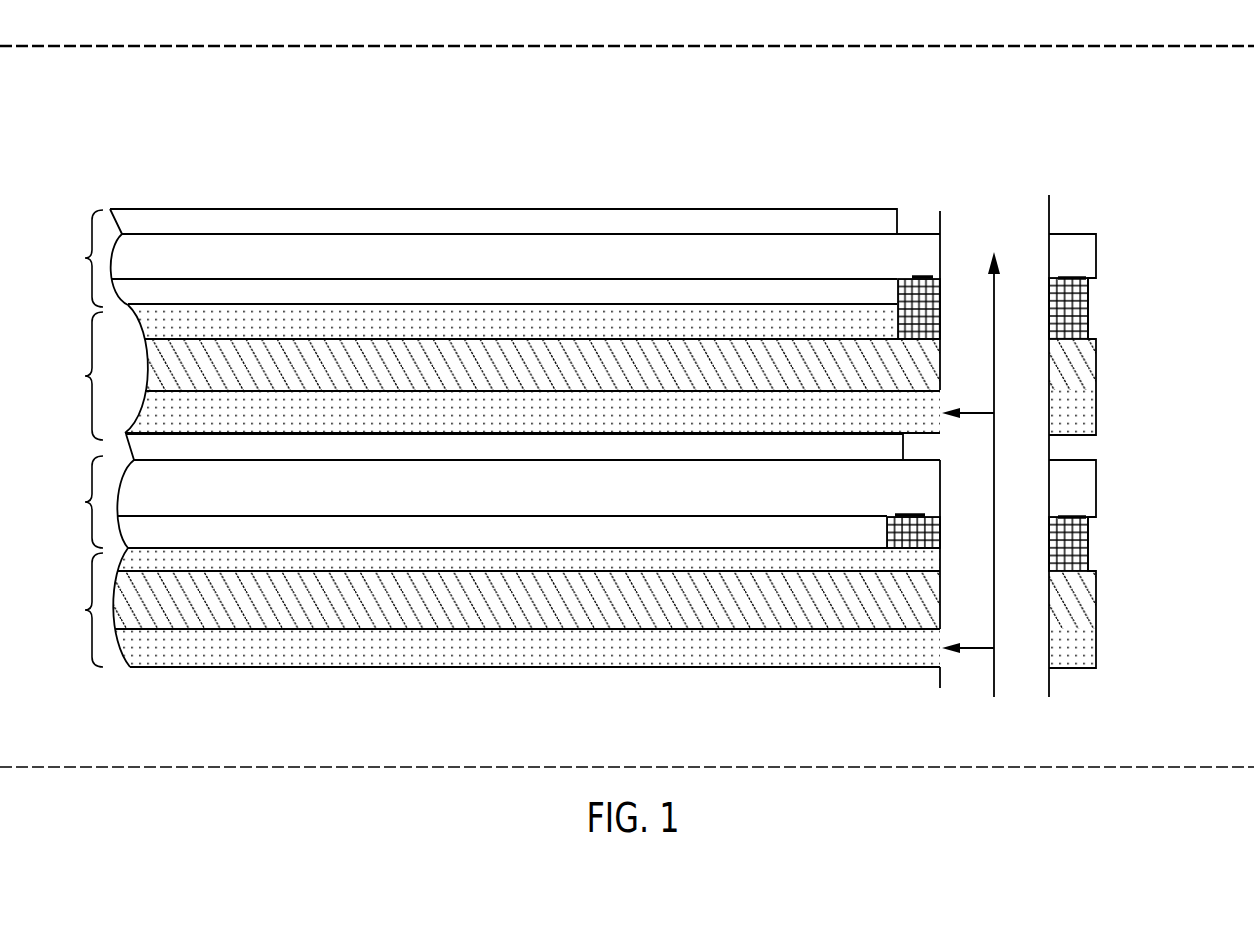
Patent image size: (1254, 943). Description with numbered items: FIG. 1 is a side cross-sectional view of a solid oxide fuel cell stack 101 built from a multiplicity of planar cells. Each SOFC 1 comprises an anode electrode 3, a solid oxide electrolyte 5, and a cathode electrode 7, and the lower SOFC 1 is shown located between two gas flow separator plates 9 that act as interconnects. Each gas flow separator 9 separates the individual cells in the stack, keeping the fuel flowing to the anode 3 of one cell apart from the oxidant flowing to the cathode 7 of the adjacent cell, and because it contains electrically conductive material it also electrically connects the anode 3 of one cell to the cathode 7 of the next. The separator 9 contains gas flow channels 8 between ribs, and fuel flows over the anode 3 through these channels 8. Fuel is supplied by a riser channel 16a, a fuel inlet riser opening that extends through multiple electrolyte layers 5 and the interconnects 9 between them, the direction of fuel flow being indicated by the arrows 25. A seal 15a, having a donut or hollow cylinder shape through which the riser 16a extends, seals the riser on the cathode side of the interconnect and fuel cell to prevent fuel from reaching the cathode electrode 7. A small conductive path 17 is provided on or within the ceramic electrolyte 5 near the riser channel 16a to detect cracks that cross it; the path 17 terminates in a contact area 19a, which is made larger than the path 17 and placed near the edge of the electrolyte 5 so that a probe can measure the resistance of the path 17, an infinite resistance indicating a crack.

The battery 101 is at (1232, 93).
The SOFC 1 is at (99, 379).
The anode electrode 3 is at (157, 222).
The solid oxide electrolyte 5 is at (390, 240).
The cathode electrode 7 is at (205, 296).
The gas flow channels 8 is at (293, 307).
The gas flow separator 9 is at (580, 486).
The conductive path 17 is at (912, 278).
The riser channel 16a is at (1048, 222).
The contact area 19a is at (1080, 278).
The seal 15a is at (1088, 310).
The current flow direction 25 is at (996, 380).